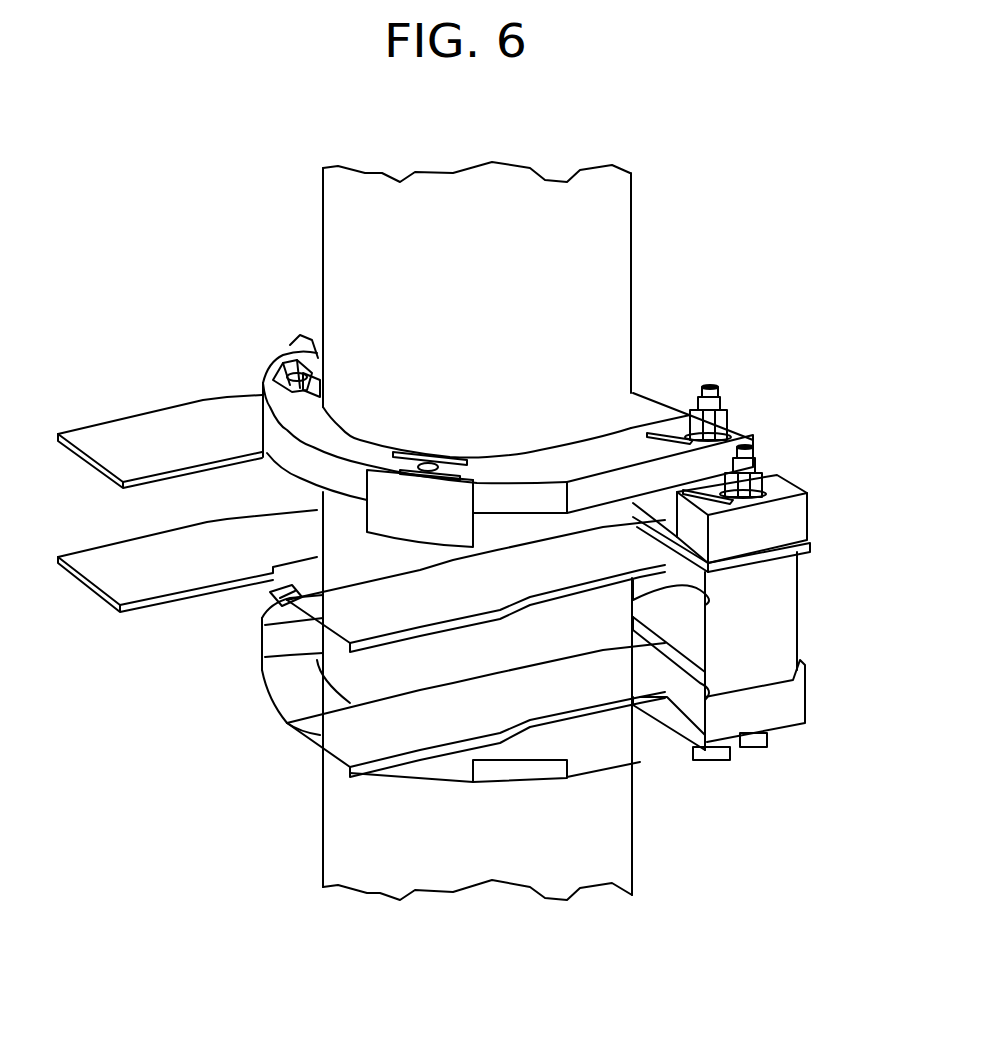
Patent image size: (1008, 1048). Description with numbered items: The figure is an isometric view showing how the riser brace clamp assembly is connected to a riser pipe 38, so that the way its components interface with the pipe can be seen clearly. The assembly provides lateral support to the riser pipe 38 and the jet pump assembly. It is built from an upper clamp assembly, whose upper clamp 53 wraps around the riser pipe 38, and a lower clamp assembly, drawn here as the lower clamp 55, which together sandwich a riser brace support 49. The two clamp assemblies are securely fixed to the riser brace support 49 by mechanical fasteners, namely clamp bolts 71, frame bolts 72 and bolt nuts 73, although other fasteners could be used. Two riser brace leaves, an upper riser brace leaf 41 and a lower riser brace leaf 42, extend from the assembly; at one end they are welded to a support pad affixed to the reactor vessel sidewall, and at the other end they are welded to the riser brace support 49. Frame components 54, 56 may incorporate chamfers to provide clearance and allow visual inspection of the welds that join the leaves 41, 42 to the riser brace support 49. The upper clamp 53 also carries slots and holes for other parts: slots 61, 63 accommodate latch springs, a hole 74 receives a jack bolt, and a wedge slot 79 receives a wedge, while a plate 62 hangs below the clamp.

The riser pipe 38 is at (613, 835).
The upper riser brace leaf 41 is at (83, 463).
The lower riser brace leaf 42 is at (95, 582).
The riser brace support 49 is at (797, 598).
The upper clamp 53 is at (298, 462).
The frame component 54 is at (810, 507).
The lower clamp ring 55 is at (278, 705).
The frame component 56 is at (788, 730).
The slot 61 is at (690, 436).
The hanging plate 62 is at (703, 480).
The slot 63 is at (273, 365).
The clamp bolt 71 is at (708, 388).
The frame bolt 72 is at (783, 451).
The bolt nut 73 is at (772, 482).
The hole 74 is at (298, 343).
The wedge slot 79 is at (303, 370).